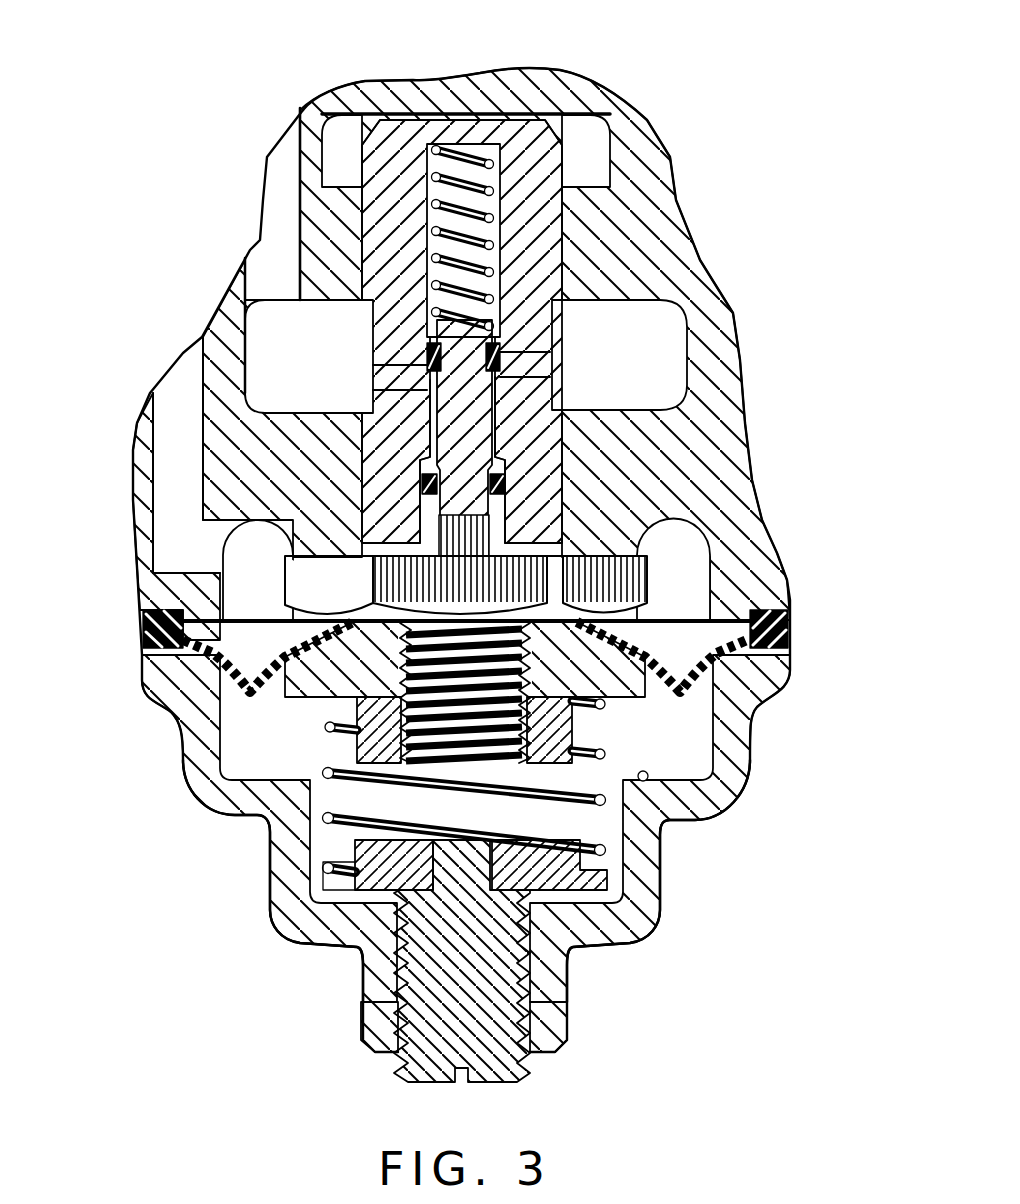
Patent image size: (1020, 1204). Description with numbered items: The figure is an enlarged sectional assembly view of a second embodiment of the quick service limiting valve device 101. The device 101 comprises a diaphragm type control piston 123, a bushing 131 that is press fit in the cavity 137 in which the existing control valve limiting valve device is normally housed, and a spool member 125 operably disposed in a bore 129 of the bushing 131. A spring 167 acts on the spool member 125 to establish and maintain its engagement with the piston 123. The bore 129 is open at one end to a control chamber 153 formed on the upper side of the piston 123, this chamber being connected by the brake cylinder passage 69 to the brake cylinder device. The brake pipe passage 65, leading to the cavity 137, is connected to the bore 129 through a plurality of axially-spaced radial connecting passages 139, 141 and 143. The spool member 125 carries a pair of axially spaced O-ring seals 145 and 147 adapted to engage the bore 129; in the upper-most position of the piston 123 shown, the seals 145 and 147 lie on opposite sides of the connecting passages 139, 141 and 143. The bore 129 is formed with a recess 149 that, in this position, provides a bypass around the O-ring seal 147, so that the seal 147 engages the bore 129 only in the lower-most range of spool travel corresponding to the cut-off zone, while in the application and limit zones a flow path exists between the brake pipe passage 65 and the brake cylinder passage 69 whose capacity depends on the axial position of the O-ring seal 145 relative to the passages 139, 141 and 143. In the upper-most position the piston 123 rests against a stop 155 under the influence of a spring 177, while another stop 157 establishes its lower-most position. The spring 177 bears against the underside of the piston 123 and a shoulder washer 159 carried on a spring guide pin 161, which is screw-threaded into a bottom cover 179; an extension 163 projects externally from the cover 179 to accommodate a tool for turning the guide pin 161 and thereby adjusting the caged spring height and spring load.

The quick service limiting valve device 101 is at (647, 120).
The diaphragm type control piston 123 is at (627, 670).
The spool member 125 is at (472, 443).
The bore 129 is at (432, 443).
The bushing 131 is at (542, 208).
The cavity 137 is at (284, 306).
The radial connecting passage 139 is at (380, 363).
The radial connecting passage 141 is at (550, 377).
The radial connecting passage 143 is at (378, 390).
The O-ring seal 145 is at (500, 356).
The O-ring seal 147 is at (503, 488).
The recess 149 is at (425, 487).
The control chamber 153 is at (237, 587).
The stop 155 is at (650, 598).
The stop 157 is at (647, 780).
The shoulder washer 159 is at (337, 878).
The spring guide pin 161 is at (427, 955).
The extension 163 is at (505, 1066).
The spring 167 is at (467, 160).
The spring 177 is at (325, 835).
The bottom cover 179 is at (552, 973).
The passage b5 65 is at (277, 190).
The passage c9 69 is at (170, 533).